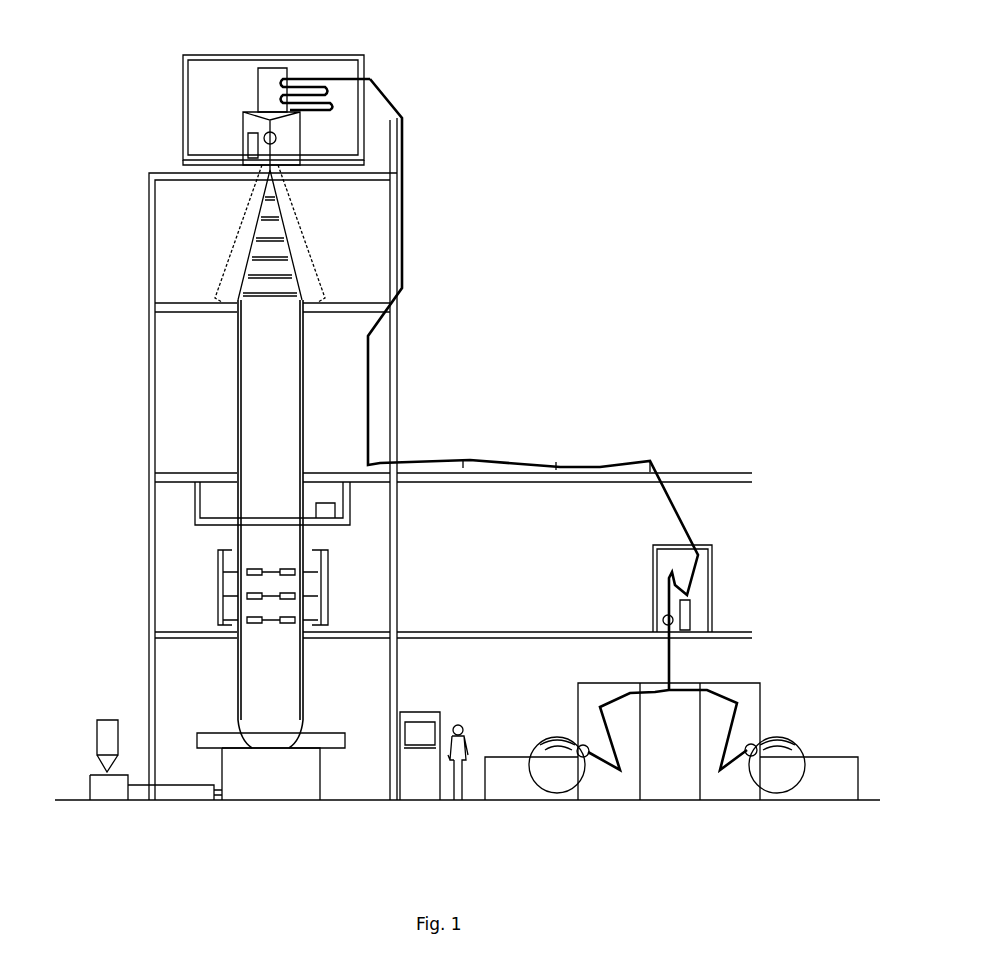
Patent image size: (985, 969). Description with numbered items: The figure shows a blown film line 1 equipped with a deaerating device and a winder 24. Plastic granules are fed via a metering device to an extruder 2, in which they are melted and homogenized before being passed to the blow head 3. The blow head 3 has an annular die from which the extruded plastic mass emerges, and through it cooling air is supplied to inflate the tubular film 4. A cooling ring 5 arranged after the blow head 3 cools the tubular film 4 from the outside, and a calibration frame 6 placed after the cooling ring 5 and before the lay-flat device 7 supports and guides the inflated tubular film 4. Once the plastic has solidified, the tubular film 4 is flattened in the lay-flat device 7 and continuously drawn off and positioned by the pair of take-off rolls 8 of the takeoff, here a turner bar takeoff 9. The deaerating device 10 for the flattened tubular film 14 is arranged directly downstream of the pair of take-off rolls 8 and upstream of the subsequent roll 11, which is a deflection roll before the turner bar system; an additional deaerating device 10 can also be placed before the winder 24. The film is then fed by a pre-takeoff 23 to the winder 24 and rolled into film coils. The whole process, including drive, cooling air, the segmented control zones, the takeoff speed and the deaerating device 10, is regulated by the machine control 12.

The blown film line 1 is at (519, 376).
The extruder 2 is at (102, 781).
The blow head 3 is at (236, 759).
The tubular film 4 is at (272, 405).
The cooling ring 5 is at (214, 733).
The calibration frame 6 is at (224, 582).
The lay-flat device 7 is at (241, 252).
The pair of take-off rolls 8 is at (290, 138).
The turner bar takeoff 9 is at (227, 82).
The deaerating device 10 is at (250, 142).
The subsequent roll 11 is at (260, 110).
The machine control 12 is at (415, 775).
The flattened tubular film 14 is at (271, 113).
The pre-takeoff 23 is at (703, 582).
The winder 24 is at (748, 728).